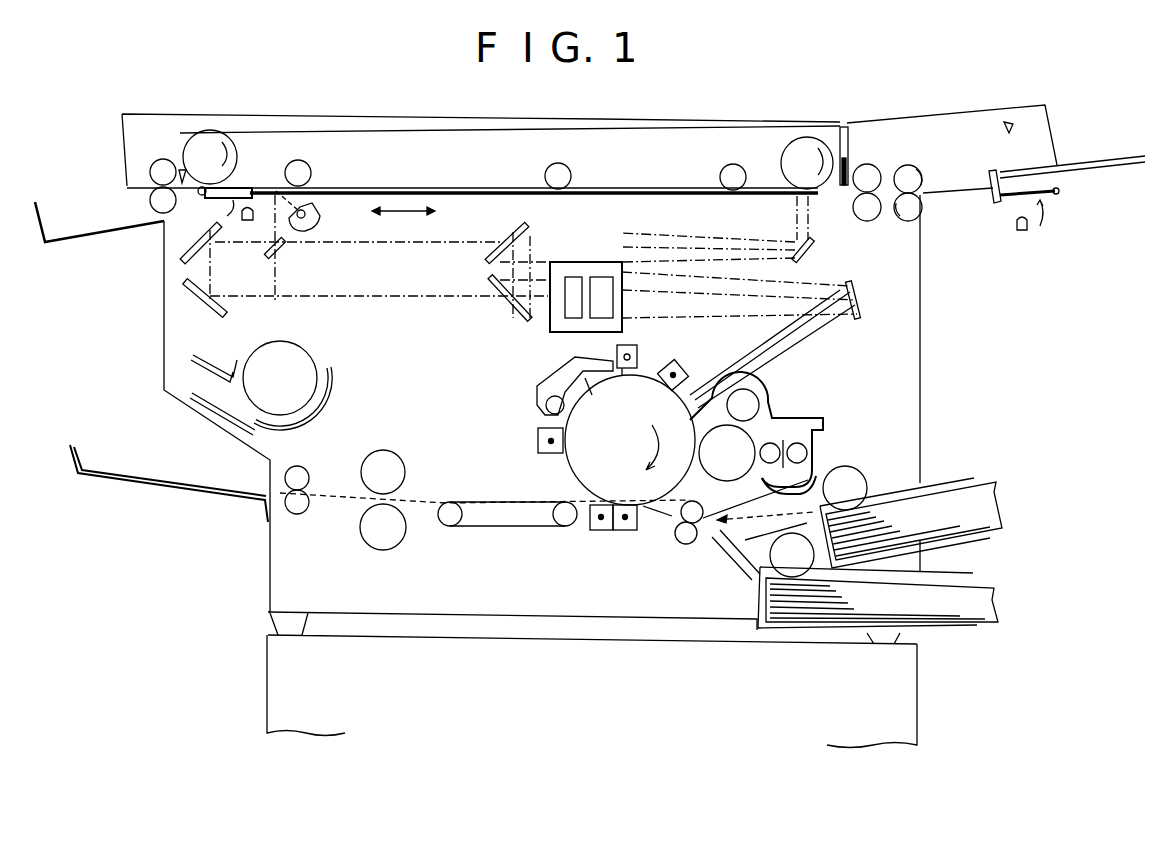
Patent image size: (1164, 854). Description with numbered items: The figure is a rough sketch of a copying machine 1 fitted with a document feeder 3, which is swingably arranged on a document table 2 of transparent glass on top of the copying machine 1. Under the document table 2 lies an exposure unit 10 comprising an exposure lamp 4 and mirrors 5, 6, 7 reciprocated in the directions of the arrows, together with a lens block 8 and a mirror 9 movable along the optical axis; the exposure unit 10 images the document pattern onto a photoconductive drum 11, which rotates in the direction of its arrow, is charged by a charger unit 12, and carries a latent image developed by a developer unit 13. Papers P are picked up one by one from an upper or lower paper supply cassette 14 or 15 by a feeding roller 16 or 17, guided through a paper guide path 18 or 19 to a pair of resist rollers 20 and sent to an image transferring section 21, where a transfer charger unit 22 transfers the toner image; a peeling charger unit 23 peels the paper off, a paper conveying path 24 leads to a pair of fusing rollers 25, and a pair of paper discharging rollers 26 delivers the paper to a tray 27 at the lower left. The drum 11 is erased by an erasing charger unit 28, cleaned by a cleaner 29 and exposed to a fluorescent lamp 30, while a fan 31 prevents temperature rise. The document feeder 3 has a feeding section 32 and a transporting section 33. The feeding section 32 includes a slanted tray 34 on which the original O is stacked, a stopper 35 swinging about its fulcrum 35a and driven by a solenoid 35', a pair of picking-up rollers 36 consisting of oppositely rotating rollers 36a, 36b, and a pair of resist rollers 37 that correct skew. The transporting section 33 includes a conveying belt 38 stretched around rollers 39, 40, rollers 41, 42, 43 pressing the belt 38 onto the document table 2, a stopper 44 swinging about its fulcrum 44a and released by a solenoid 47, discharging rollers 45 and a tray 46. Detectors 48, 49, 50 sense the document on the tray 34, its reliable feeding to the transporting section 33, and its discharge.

The copying machine 1 is at (921, 350).
The document table 2 is at (680, 193).
The document feeder 3 is at (594, 130).
The exposure lamp 4 is at (318, 220).
The mirror 5 is at (282, 250).
The mirror 6 is at (185, 245).
The mirror 7 is at (200, 298).
The lens block 8 is at (605, 262).
The mirror 9 is at (860, 300).
The exposure unit 10 is at (430, 296).
The photoconductive drum 11 is at (570, 460).
The charger unit 12 is at (685, 368).
The developer unit 13 is at (790, 430).
The upper paper supply cassette 14 is at (948, 485).
The lower paper supply cassette 15 is at (975, 575).
The feeding roller 16 is at (860, 475).
The feeding roller 17 is at (775, 565).
The paper guide path 18 is at (812, 470).
The paper guide path 19 is at (730, 560).
The pair of resist rollers 20 is at (690, 544).
The image transferring section 21 is at (643, 516).
The transfer charger unit 22 is at (628, 531).
The peeling charger unit 23 is at (600, 531).
The paper conveying path 24 is at (515, 527).
The pair of fusing rollers 25 is at (400, 455).
The pair of paper discharging rollers 26 is at (305, 470).
The tray 27 is at (178, 490).
The erasing charger unit 28 is at (536, 440).
The cleaner 29 is at (566, 375).
The fluorescent lamp 30 is at (638, 355).
The fan 31 is at (305, 357).
The feeding section 32 is at (970, 112).
The transporting section 33 is at (368, 114).
The tray 34 is at (1118, 175).
The stopper 35 is at (1007, 205).
The fulcrum 35a is at (1057, 196).
The solenoid 35' is at (1023, 238).
The pair of picking-up rollers 36 is at (925, 172).
The roller 36a is at (921, 178).
The roller 36b is at (905, 220).
The pair of resist rollers 37 is at (880, 170).
The conveying belt 38 is at (742, 121).
The roller 39 is at (783, 160).
The roller 40 is at (215, 133).
The roller 41 is at (722, 172).
The roller 42 is at (548, 170).
The roller 43 is at (310, 170).
The stopper 44 is at (240, 188).
The fulcrum 44a is at (202, 196).
The discharging rollers 45 is at (158, 164).
The tray 46 is at (90, 238).
The solenoid 47 is at (246, 222).
The detector 48 is at (1010, 130).
The detector 49 is at (850, 165).
The detector 50 is at (181, 166).
The original O is at (1104, 166).
The paper P is at (1000, 492).